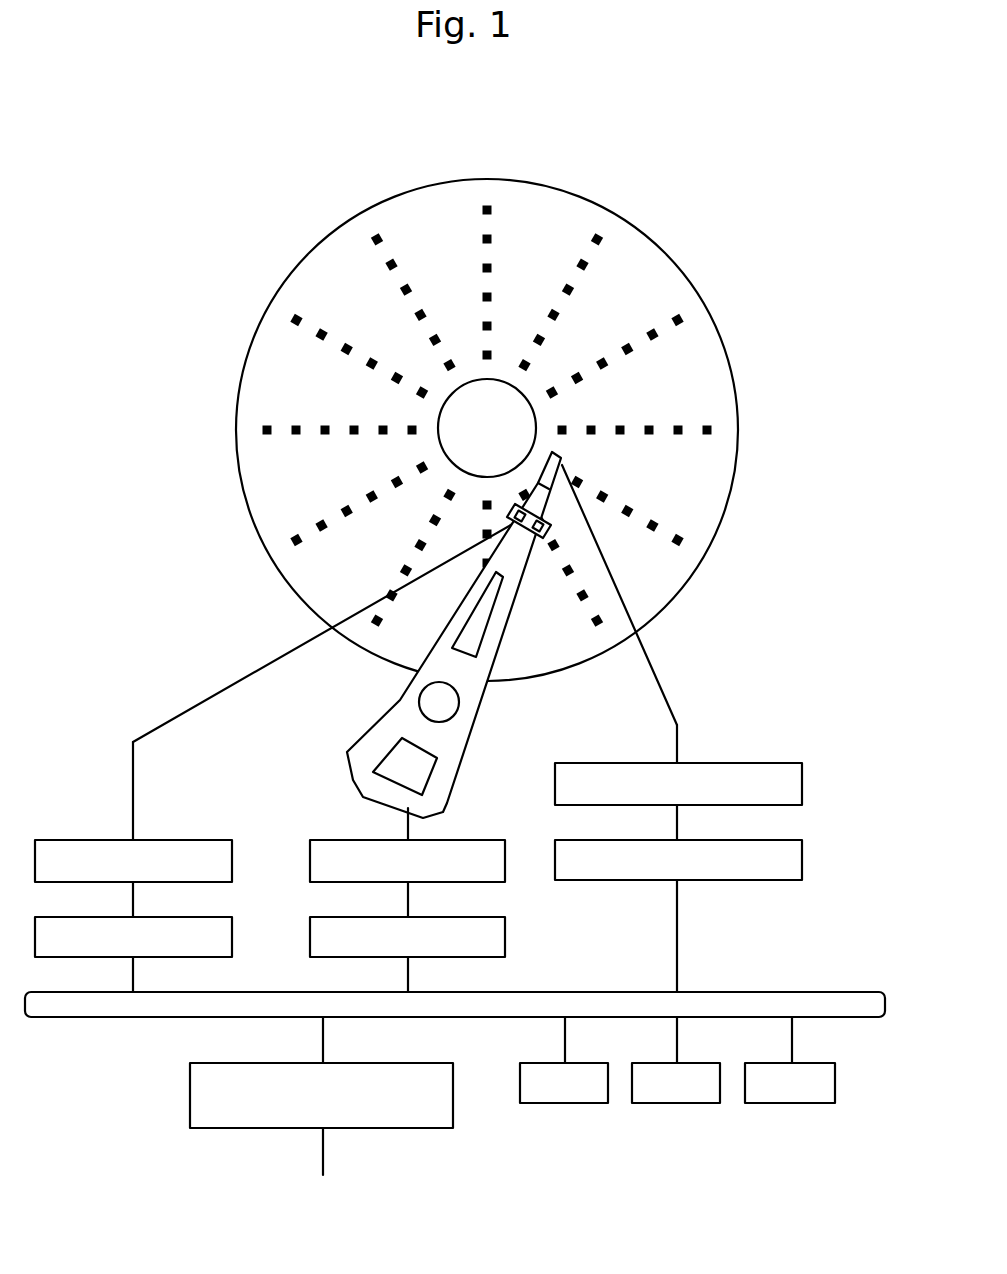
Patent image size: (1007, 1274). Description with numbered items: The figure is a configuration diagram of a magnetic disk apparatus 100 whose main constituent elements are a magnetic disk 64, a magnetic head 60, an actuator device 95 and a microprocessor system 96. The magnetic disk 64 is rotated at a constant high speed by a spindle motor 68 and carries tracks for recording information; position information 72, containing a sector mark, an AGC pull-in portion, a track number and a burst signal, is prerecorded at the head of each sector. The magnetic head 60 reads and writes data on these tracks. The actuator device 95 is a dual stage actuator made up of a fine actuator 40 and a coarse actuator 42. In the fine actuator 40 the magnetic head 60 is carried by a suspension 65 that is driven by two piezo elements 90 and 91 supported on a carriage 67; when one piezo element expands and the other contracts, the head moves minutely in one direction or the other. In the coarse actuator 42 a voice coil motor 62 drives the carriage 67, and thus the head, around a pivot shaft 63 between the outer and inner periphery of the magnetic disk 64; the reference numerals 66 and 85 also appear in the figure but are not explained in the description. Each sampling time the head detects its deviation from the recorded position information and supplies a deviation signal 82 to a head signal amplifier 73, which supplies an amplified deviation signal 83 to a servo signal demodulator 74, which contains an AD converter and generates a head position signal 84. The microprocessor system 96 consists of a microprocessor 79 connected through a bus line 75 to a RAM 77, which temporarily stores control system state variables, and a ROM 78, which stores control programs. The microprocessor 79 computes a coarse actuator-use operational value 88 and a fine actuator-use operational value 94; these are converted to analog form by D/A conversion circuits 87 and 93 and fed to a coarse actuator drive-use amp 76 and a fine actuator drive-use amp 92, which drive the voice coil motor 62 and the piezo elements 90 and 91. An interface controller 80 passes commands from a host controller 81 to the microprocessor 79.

The magnetic disk apparatus 100 is at (676, 172).
The magnetic disk 64 is at (737, 372).
The spindle motor 68 is at (457, 392).
The position information 72 is at (653, 327).
The magnetic head 60 is at (562, 462).
The suspension 65 is at (521, 496).
The piezo element 90 is at (540, 530).
The piezo element 91 is at (513, 518).
The fine actuator 40 is at (116, 773).
The coarse actuator 42 is at (304, 792).
The voice coil motor 62 is at (347, 762).
The pivot shaft 63 is at (418, 698).
The drive force 66 is at (385, 818).
The carriage 67 is at (476, 692).
The actuator device 95 is at (619, 614).
The microprocessor system 96 is at (218, 690).
The fine actuator drive-use amp 92 is at (182, 840).
The D/A conversion circuit 93 is at (232, 932).
The fine actuator-use operational value 94 is at (133, 975).
The coarse actuator drive-use amp 76 is at (486, 840).
The drive signal line 85 is at (408, 897).
The D/A conversion circuit 87 is at (505, 933).
The coarse actuator-use operational value 88 is at (408, 975).
The head signal amplifier 73 is at (802, 778).
The servo signal demodulator 74 is at (802, 855).
The deviation signal 82 is at (677, 742).
The amplified deviation signal 83 is at (677, 823).
The head position signal 84 is at (677, 935).
The bus line 75 is at (820, 992).
The interface controller 80 is at (453, 1115).
The host controller 81 is at (440, 1195).
The microprocessor 79 is at (578, 1103).
The ROM 78 is at (690, 1103).
The RAM 77 is at (803, 1103).